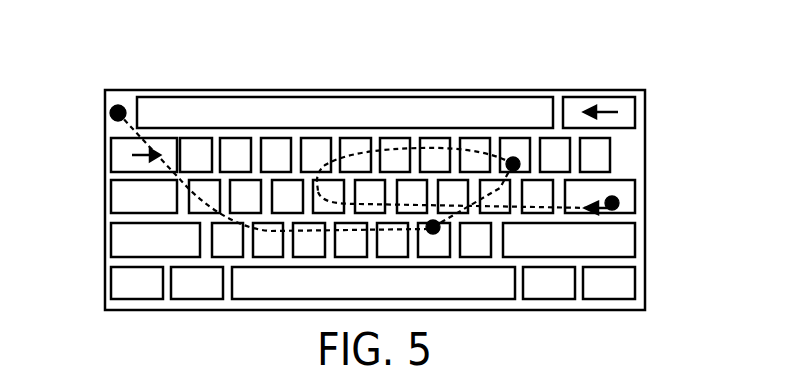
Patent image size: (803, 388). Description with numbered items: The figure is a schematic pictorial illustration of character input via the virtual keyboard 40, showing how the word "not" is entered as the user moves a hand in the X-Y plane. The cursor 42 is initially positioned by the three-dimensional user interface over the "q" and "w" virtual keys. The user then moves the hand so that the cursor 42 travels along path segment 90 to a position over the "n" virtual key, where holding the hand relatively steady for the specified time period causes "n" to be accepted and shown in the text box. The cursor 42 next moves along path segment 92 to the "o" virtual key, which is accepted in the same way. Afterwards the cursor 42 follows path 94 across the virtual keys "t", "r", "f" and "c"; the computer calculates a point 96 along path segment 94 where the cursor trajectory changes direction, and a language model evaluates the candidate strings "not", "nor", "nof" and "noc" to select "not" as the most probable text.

The virtual keyboard 40 is at (105, 97).
The cursor 42 is at (112, 119).
The path segment 90 is at (182, 188).
The path segment 92 is at (516, 197).
The path segment 94 is at (467, 165).
The point 96 is at (316, 192).